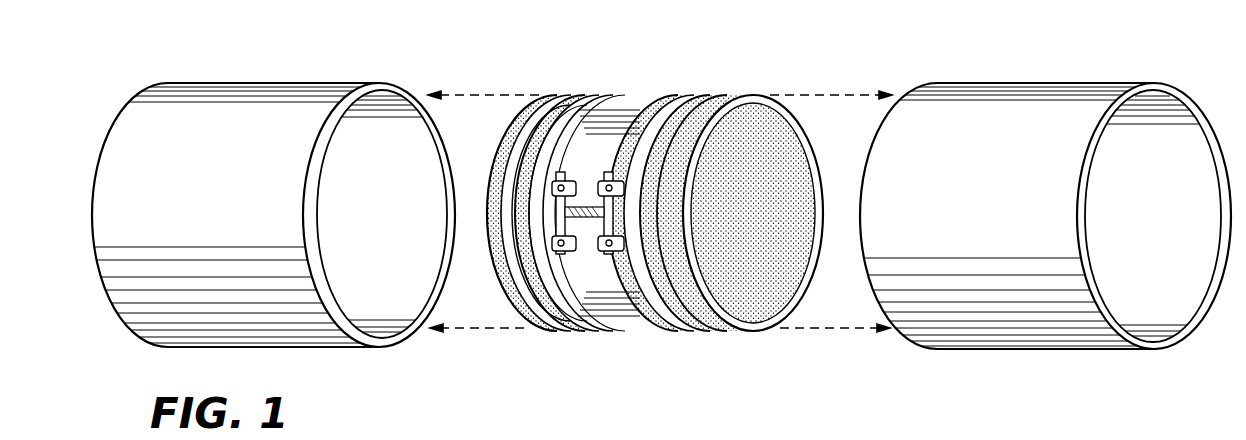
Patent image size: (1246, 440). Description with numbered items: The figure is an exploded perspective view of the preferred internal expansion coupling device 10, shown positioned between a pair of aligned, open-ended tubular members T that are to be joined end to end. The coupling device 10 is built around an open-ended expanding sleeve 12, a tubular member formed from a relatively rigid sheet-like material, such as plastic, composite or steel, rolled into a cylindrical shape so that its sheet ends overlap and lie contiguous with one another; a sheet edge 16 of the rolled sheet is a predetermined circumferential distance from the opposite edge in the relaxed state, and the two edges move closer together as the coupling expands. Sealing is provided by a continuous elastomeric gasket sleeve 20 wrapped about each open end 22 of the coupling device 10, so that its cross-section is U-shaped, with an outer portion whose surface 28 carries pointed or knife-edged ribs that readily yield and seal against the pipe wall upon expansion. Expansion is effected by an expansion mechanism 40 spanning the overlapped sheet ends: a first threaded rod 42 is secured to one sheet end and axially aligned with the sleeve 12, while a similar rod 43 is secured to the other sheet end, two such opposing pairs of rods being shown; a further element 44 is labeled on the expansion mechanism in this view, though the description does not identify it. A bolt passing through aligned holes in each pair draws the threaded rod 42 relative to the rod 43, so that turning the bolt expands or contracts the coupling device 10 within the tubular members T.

The tubular member T is at (277, 83).
The coupling device 10 is at (656, 211).
The expanding sleeve 12 is at (650, 96).
The sheet edge 16 is at (668, 226).
The gasket sleeve 20 is at (656, 211).
The open end 22 is at (510, 127).
The surface 28 is at (690, 97).
The expansion mechanism 40 is at (541, 219).
The first threaded rod 42 is at (592, 252).
The rod 43 is at (630, 192).
The clamp bolt 44 is at (628, 140).